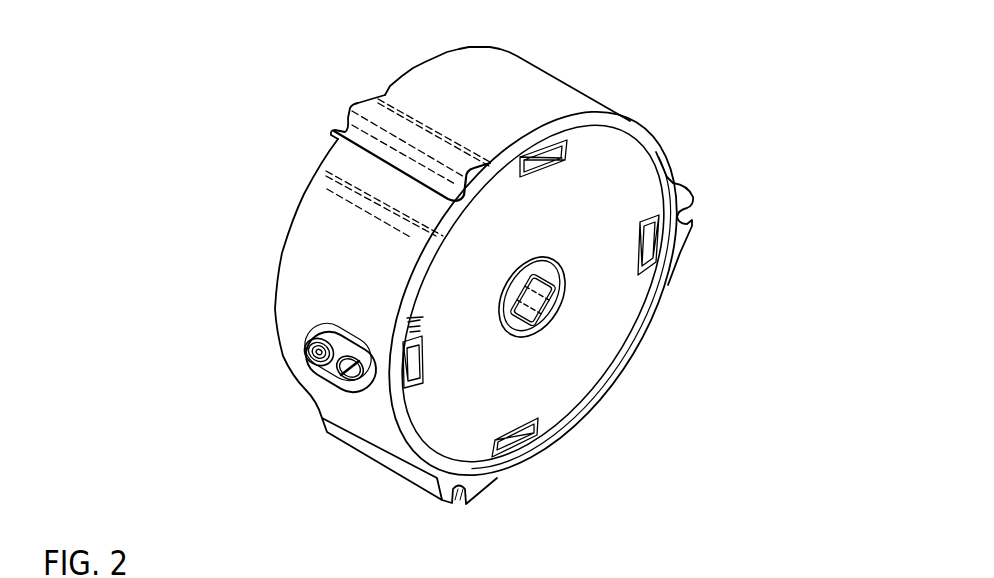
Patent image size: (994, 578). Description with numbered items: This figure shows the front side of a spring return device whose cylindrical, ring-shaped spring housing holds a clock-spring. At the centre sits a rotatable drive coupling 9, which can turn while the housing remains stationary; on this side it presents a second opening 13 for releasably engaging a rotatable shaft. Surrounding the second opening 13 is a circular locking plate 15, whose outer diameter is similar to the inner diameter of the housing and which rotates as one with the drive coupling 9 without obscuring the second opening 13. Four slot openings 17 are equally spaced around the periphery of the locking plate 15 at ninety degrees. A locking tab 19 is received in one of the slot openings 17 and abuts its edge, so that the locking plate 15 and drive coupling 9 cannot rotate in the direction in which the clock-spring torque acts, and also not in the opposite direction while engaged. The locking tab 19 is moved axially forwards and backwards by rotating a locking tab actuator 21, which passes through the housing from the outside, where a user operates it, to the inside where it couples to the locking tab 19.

The drive coupling 9 is at (505, 293).
The second opening 13 is at (531, 299).
The locking plate 15 is at (585, 355).
The slot openings 17 is at (647, 251).
The locking tab 19 is at (415, 367).
The locking tab actuator 21 is at (345, 374).